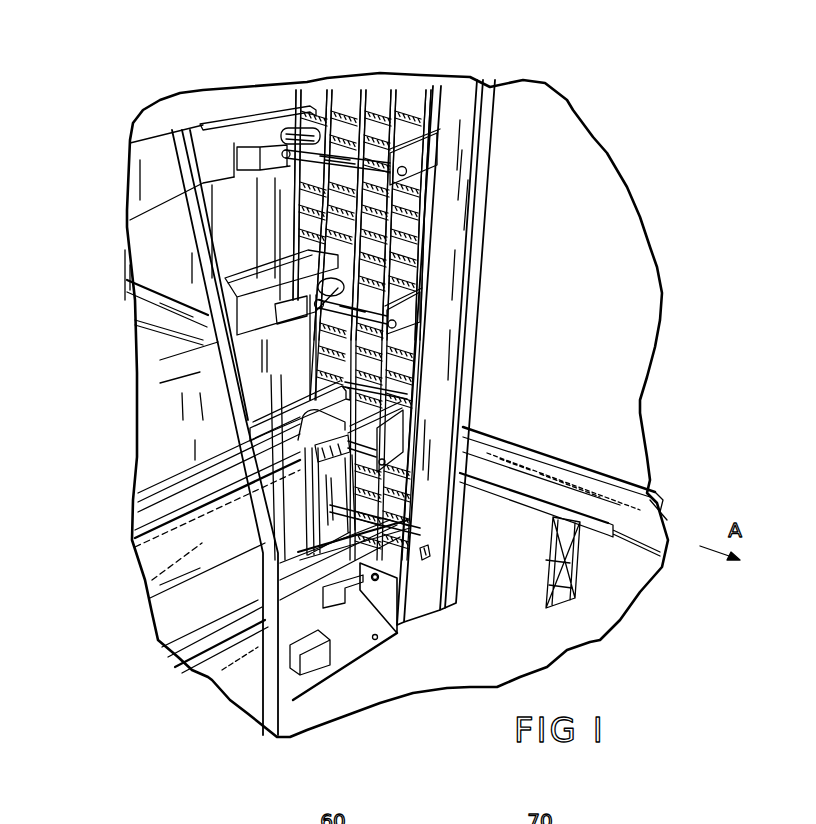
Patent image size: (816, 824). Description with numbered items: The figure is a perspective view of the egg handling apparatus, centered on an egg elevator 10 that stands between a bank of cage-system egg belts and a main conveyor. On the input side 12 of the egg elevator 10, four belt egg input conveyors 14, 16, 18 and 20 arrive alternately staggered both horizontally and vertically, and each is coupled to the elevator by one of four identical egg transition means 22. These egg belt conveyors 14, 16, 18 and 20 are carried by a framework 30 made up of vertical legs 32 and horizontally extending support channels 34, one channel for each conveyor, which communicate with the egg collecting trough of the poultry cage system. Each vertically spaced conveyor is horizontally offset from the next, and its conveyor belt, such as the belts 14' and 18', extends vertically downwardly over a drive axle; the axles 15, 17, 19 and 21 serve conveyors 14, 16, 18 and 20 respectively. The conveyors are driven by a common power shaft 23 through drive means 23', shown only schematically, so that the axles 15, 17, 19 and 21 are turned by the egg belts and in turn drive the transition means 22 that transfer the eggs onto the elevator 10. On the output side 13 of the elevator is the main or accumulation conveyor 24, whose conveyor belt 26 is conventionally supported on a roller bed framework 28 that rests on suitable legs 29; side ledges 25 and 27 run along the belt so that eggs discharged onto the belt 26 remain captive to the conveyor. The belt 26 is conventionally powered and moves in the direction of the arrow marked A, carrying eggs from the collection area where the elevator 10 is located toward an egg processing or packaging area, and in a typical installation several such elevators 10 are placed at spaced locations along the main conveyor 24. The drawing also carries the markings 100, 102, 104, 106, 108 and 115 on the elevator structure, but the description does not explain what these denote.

The egg elevator 10 is at (565, 146).
The input side 12 is at (423, 98).
The output side 13 is at (468, 398).
The egg input conveyor 14 is at (232, 118).
The conveyor belt 14' is at (278, 260).
The drive axle 15 is at (408, 170).
The egg input conveyor 16 is at (163, 285).
The drive axle 17 is at (395, 316).
The egg input conveyor 18 is at (217, 498).
The conveyor belt 18' is at (308, 467).
The drive axle 19 is at (387, 461).
The egg input conveyor 20 is at (199, 620).
The drive axle 21 is at (376, 582).
The egg transition means 22 is at (250, 102).
The common power shaft 23 is at (371, 617).
The drive means 23' is at (343, 666).
The main or accumulation conveyor 24 is at (556, 445).
The side ledge 25 is at (518, 500).
The conveyor belt 26 is at (657, 521).
The side ledge 27 is at (585, 465).
The roller bed framework 28 is at (585, 571).
The legs 29 is at (546, 583).
The framework 30 is at (113, 110).
The vertical legs 32 is at (263, 715).
The support channels 34 is at (150, 163).
The rack strip 100 is at (381, 127).
The rack rail 102 is at (312, 95).
The rack rail 104 is at (343, 88).
The rack rail 106 is at (383, 86).
The rack rail 108 is at (431, 82).
The column face 115 is at (460, 263).